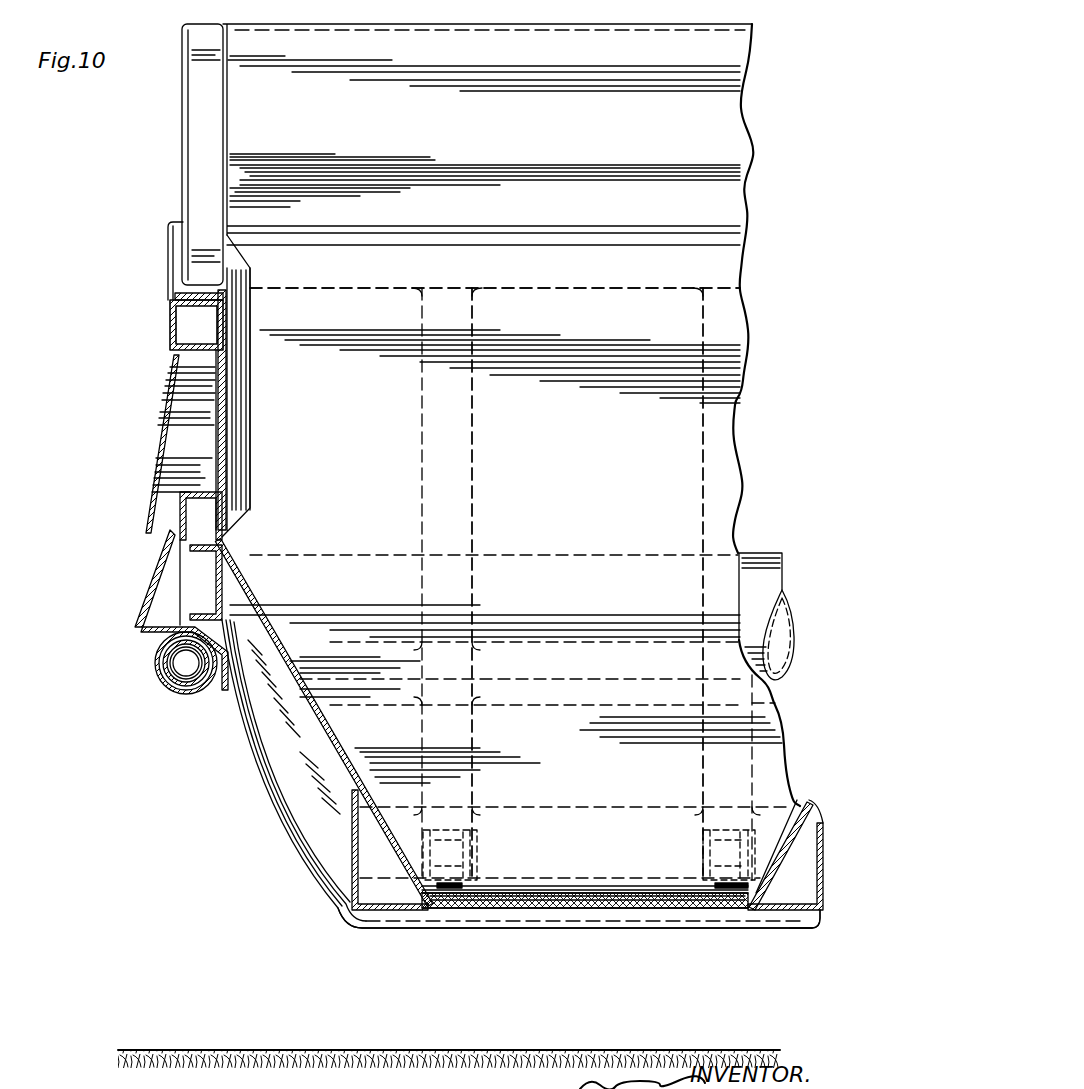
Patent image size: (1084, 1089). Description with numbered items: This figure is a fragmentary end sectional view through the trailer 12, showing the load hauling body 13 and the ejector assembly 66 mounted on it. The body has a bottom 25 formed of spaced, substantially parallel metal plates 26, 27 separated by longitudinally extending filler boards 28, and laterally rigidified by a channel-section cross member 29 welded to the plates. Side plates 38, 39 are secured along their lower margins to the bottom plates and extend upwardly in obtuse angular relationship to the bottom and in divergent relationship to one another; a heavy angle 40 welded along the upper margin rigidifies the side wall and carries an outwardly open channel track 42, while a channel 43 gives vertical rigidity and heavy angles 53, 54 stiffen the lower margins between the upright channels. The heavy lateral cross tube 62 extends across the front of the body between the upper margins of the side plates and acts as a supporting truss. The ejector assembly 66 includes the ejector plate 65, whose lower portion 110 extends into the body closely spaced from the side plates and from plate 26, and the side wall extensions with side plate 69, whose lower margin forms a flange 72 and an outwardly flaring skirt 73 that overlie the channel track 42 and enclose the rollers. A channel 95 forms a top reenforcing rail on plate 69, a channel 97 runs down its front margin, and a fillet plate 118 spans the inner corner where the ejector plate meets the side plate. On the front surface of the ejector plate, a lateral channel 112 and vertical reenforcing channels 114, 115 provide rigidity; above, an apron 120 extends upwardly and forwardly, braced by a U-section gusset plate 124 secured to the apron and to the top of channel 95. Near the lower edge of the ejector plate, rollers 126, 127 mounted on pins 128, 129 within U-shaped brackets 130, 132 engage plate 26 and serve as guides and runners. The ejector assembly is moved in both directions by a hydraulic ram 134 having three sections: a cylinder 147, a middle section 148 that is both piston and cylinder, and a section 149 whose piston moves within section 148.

The trailer 12 is at (177, 180).
The gusset plate 124 is at (190, 120).
The apron 120 is at (248, 143).
The channel 95 is at (175, 275).
The ejector assembly 66 is at (176, 360).
The channel 97 is at (208, 398).
The side plate 69 is at (218, 390).
The ejector plate 65 is at (278, 440).
The fillet plate 118 is at (240, 420).
The flange 72 is at (190, 495).
The channel track 42 is at (220, 578).
The angle 40 is at (245, 612).
The skirt 73 is at (133, 615).
The ram section 148 is at (158, 668).
The ram section 149 is at (170, 655).
The ram 134 is at (161, 680).
The ram section 147 is at (172, 692).
The load hauling body 13 is at (267, 722).
The side plate 38 is at (310, 718).
The lower portion 110 is at (335, 757).
The channel 43 is at (318, 802).
The side plate 39 is at (776, 855).
The angle 54 is at (810, 928).
The angle 53 is at (375, 920).
The roller 126 is at (435, 920).
The cross member 29 is at (467, 920).
The filler board 28 is at (520, 905).
The bottom 25 is at (565, 918).
The plate 26 is at (600, 905).
The plate 27 is at (688, 910).
The roller 127 is at (730, 908).
The pin 128 is at (475, 865).
The bracket 130 is at (473, 840).
The bracket 132 is at (700, 835).
The pin 129 is at (700, 865).
The channel 112 is at (541, 290).
The vertical reenforcing channel 114 is at (474, 486).
The vertical reenforcing channel 115 is at (703, 478).
The cross tube 62 is at (758, 572).